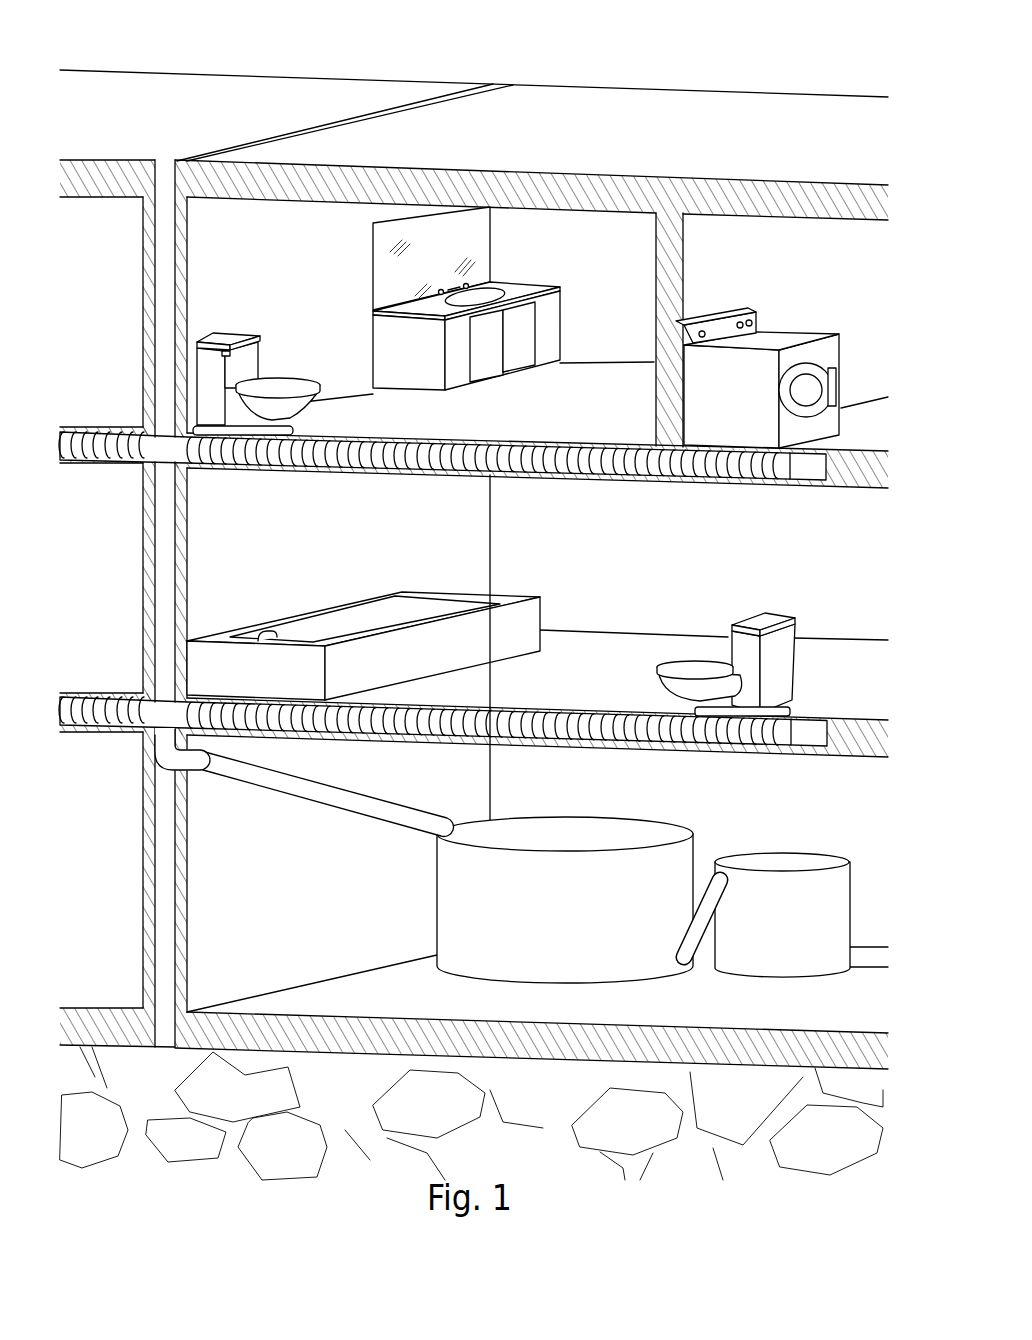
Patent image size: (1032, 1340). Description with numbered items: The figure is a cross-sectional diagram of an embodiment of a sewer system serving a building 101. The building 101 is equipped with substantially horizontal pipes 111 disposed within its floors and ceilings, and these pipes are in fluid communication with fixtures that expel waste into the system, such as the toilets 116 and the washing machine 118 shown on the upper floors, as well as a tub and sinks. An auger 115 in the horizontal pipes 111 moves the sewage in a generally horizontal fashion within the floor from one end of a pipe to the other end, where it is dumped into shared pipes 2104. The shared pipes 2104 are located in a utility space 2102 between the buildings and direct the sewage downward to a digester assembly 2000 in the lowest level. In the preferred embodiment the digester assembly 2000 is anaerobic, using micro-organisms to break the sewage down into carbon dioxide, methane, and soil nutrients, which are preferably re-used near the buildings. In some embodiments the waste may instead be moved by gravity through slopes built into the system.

The building 101 is at (690, 62).
The horizontal pipes 111 is at (518, 483).
The auger 115 is at (497, 712).
The toilets 116 is at (255, 305).
The washing machines 118 is at (772, 300).
The digester assembly 2000 is at (705, 808).
The utility space 2102 is at (150, 884).
The shared pipes 2104 is at (165, 648).